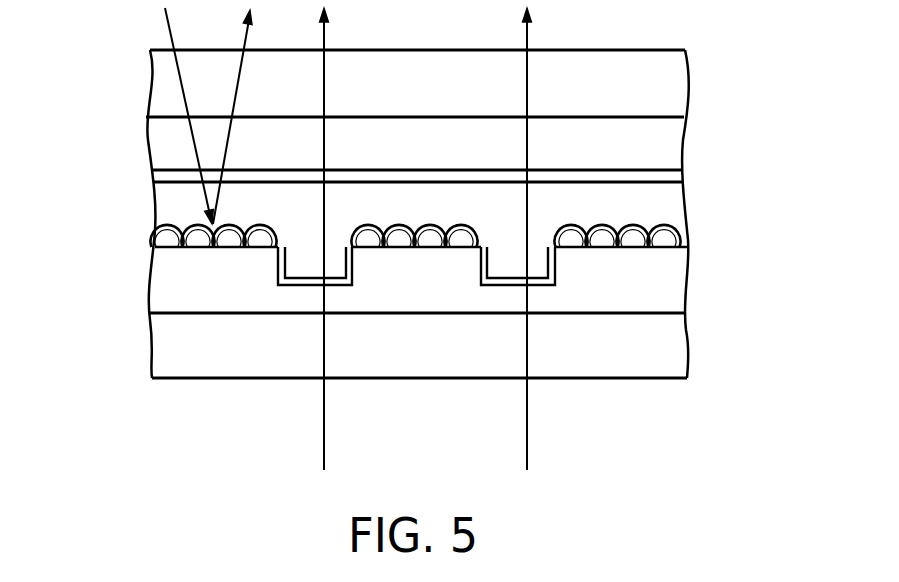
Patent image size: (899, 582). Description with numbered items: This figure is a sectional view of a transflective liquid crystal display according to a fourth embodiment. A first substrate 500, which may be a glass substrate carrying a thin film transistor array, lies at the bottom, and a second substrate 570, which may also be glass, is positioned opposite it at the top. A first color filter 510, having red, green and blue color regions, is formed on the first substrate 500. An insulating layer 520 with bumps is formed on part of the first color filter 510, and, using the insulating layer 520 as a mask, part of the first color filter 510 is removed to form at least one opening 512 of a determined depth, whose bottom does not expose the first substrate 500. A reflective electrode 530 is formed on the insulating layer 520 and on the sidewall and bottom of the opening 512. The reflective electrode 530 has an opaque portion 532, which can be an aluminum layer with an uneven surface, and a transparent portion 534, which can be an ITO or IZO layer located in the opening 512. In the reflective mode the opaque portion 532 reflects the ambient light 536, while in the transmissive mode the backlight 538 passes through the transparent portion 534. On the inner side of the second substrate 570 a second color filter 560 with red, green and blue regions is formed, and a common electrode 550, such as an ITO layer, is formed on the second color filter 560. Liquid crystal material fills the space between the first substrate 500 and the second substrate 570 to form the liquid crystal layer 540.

The first substrate 500 is at (666, 333).
The first color filter 510 is at (666, 285).
The opening 512 is at (353, 268).
The insulating layer 520 is at (666, 246).
The reflective electrode 530 is at (666, 225).
The opaque portion 532 is at (234, 239).
The transparent portion 534 is at (301, 290).
The ambient light 536 is at (165, 32).
The backlight 538 is at (326, 451).
The liquid crystal layer 540 is at (666, 202).
The common electrode 550 is at (666, 177).
The second color filter 560 is at (666, 147).
The second substrate 570 is at (666, 82).